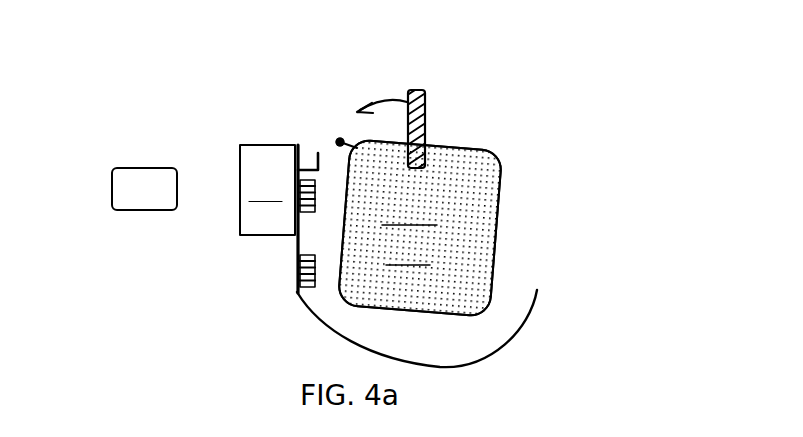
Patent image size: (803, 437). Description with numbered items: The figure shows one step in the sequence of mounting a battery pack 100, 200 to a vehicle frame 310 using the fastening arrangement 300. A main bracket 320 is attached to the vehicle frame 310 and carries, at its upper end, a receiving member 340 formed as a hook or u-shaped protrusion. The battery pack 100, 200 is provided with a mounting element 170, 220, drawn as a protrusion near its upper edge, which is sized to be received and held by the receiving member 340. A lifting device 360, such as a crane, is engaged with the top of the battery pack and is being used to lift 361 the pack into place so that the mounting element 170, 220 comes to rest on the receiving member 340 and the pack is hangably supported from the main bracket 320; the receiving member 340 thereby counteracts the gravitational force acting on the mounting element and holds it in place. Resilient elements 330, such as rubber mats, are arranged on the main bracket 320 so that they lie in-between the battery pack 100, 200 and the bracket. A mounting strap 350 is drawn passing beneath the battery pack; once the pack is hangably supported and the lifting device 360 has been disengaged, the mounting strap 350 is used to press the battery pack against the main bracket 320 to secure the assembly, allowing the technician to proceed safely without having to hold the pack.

The fastening arrangement 300 is at (136, 87).
The vehicle frame 310 is at (267, 190).
The main bracket 320 is at (296, 245).
The resilient element 330 is at (297, 287).
The receiving member 340 is at (310, 160).
The mounting strap 350 is at (532, 315).
The lifting device 360 is at (417, 90).
The lift 361 is at (382, 91).
The mounting element 170 is at (340, 142).
The mounting element 220 is at (340, 142).
The battery pack 100 is at (420, 227).
The battery pack 200 is at (420, 227).